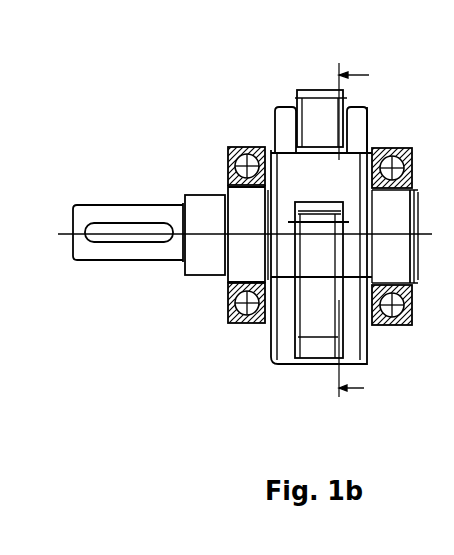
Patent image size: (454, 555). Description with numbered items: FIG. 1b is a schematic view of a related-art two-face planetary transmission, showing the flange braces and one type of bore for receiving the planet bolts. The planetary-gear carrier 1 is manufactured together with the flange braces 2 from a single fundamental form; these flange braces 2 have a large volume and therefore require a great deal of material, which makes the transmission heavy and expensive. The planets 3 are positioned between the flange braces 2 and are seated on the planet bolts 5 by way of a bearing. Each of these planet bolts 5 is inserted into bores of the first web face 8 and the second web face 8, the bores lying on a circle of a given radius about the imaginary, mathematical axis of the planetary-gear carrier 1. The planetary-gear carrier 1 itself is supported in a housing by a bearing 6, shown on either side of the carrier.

The planetary-gear carrier 1 is at (149, 221).
The flange braces 2 is at (320, 180).
The planets 3 is at (310, 133).
The planet bolts 5 is at (337, 278).
The bearing 6 is at (230, 150).
The web face 8 is at (289, 113).